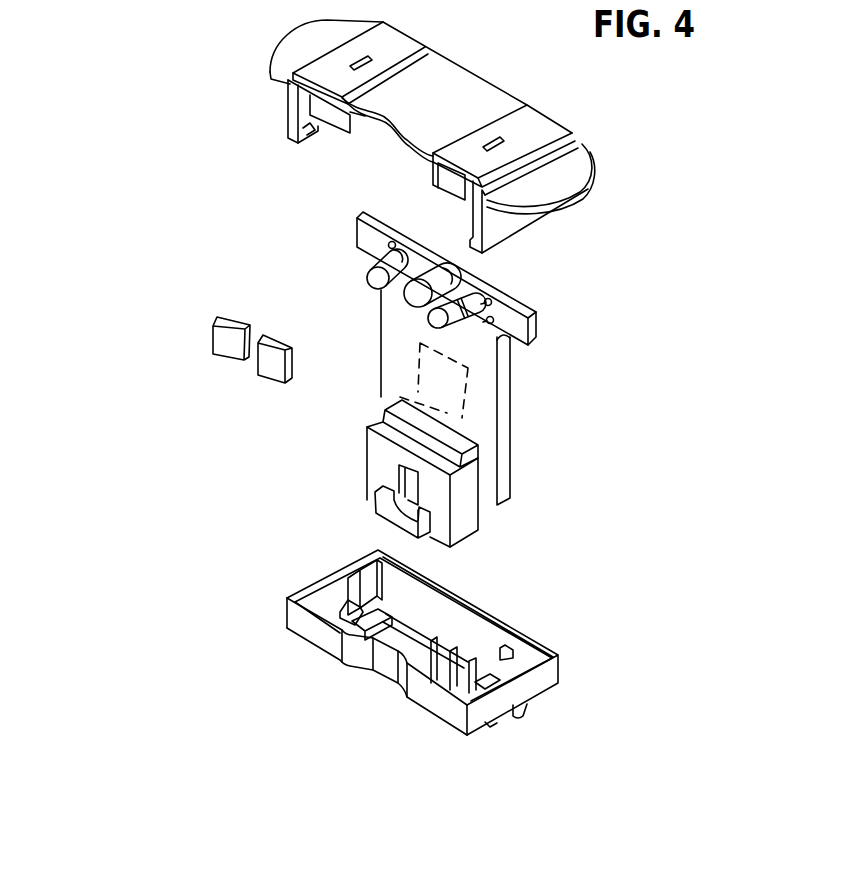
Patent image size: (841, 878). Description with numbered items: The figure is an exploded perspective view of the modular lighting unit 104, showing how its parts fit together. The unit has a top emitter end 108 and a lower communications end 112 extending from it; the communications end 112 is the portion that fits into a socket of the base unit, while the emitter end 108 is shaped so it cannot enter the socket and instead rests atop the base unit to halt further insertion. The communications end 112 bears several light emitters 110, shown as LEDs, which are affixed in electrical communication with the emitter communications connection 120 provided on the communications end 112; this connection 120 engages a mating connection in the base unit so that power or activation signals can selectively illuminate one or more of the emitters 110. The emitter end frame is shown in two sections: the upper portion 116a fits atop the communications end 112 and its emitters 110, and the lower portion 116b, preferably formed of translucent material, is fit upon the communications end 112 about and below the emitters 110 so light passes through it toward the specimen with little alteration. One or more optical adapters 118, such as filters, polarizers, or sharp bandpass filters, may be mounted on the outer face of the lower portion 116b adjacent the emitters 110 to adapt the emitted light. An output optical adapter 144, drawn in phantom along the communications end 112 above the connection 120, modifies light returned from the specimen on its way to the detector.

The modular lighting unit 104 is at (83, 176).
The upper portion of the emitter end frame 116a is at (287, 118).
The lower portion of the emitter end frame 116b is at (290, 627).
The emitter end 108 is at (508, 308).
The light emitters 110 is at (367, 278).
The communications end 112 is at (485, 425).
The optical adapters 118 is at (223, 357).
The emitter communications connection 120 is at (463, 533).
The output optical adapter 144 is at (420, 378).